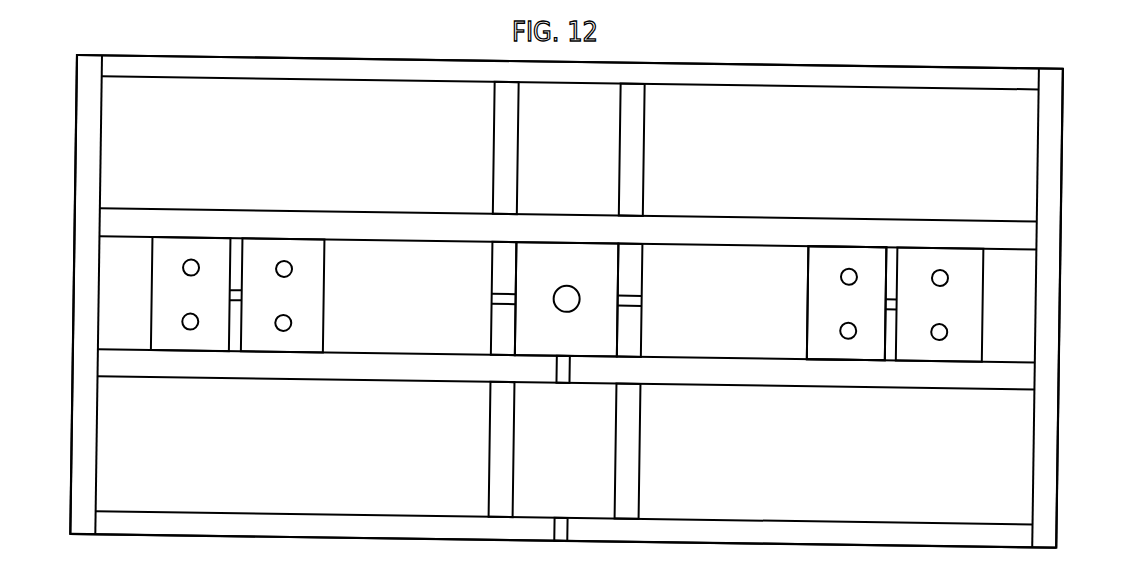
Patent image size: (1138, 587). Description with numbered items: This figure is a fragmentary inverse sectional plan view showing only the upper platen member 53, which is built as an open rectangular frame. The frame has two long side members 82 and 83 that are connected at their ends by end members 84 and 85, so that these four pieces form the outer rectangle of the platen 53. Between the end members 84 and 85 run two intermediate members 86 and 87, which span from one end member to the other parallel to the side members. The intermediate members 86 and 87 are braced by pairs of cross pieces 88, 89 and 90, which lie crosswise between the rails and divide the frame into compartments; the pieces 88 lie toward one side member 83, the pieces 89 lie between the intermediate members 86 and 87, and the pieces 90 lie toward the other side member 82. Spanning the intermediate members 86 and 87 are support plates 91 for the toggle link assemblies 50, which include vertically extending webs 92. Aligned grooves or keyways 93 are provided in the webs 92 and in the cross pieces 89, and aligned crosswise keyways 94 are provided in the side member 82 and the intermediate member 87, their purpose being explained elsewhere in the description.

The center panel 50 is at (546, 129).
The upper platen member 53 is at (1064, 451).
The side member 82 is at (799, 520).
The side member 83 is at (862, 90).
The end member 84 is at (1062, 286).
The end member 85 is at (73, 280).
The intermediate member 86 is at (426, 213).
The intermediate member 87 is at (340, 383).
The cross pieces 88 is at (495, 100).
The cross pieces 89 is at (491, 330).
The cross pieces 90 is at (489, 437).
The support plate 91 is at (326, 250).
The web 92 is at (886, 288).
The keyway 93 is at (242, 294).
The crosswise keyway 94 is at (562, 384).